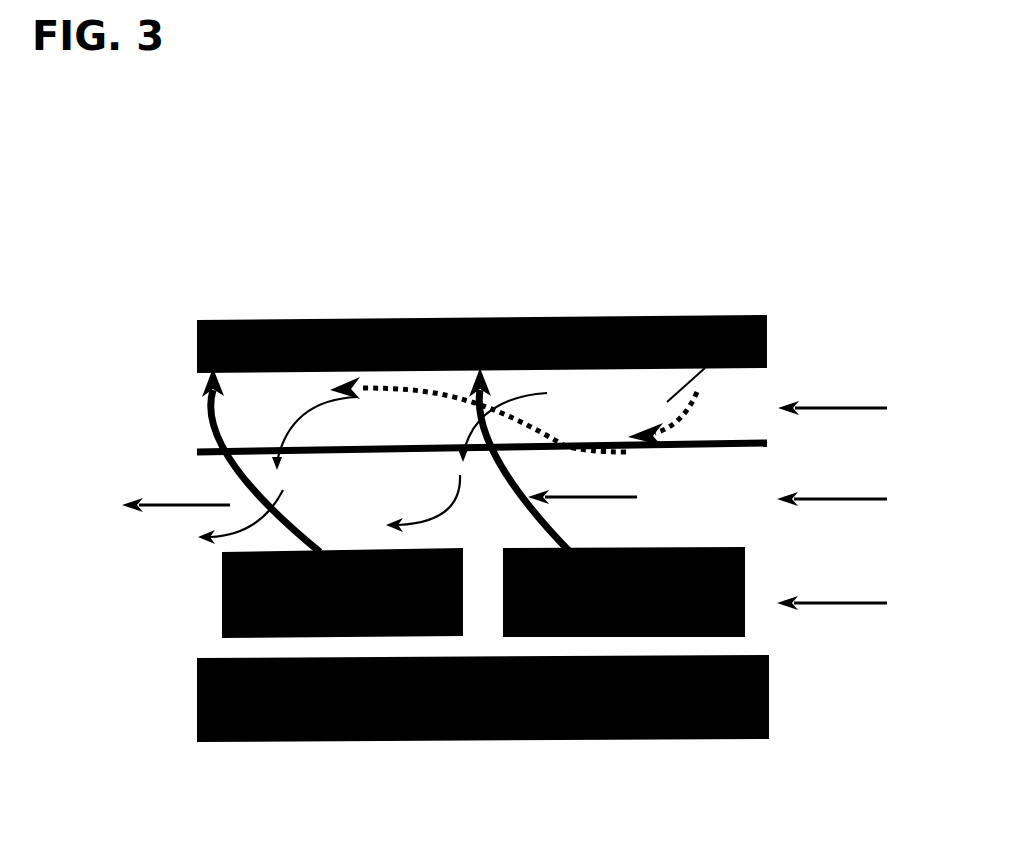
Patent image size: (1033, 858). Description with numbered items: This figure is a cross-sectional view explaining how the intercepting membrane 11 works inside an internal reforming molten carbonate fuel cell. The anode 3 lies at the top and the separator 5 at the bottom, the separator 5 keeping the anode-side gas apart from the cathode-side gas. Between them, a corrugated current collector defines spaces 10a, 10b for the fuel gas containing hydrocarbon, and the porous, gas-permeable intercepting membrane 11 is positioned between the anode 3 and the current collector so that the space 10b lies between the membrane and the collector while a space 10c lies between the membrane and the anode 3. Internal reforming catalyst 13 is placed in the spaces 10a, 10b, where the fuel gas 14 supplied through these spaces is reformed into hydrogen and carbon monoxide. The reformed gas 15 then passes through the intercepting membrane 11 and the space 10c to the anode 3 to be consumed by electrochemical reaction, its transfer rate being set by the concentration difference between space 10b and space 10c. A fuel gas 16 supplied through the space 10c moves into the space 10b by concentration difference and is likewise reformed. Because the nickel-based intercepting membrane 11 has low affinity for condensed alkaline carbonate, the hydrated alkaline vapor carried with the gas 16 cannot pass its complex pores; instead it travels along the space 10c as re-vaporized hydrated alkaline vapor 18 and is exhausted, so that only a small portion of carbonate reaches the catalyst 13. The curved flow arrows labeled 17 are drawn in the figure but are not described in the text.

The anode 3 is at (703, 316).
The separator 5 is at (197, 708).
The space 10a is at (348, 498).
The space 10b is at (291, 372).
The space 10c is at (767, 316).
The intercepting membrane 11 is at (197, 452).
The internal reforming catalyst 13 is at (463, 617).
The fuel gas 14 is at (504, 536).
The reformed gas 15 is at (543, 536).
The fuel gas 16 is at (832, 394).
The circulating flow 17 is at (535, 393).
The hydrated alkaline vapor 18 is at (393, 320).